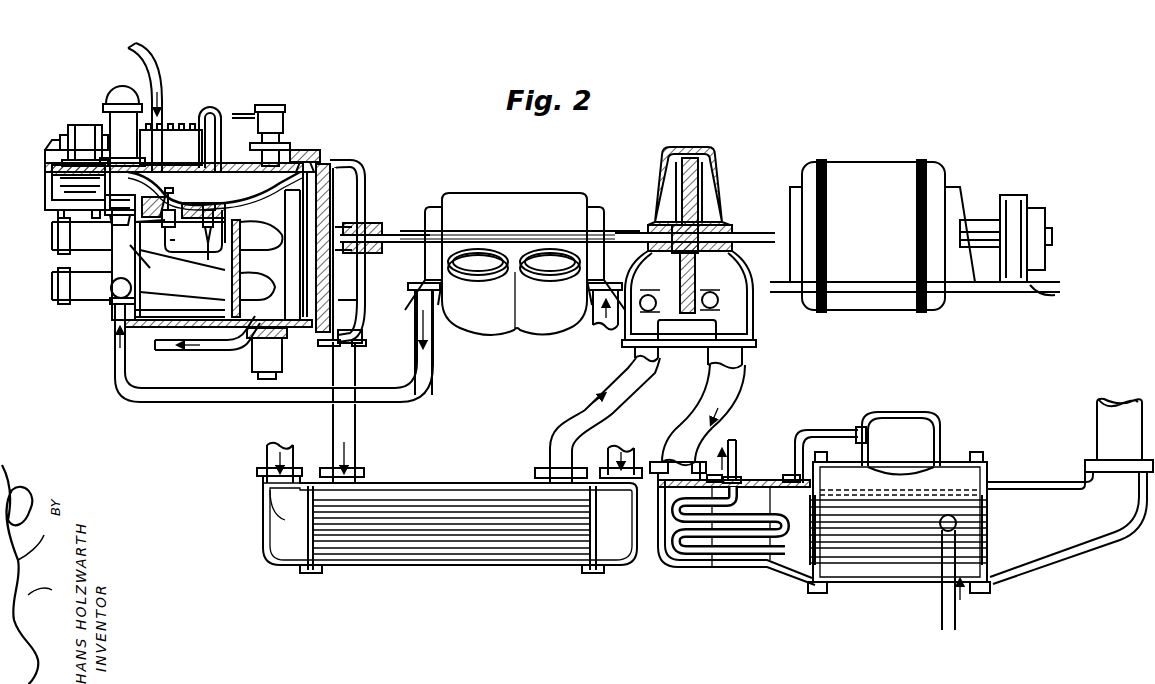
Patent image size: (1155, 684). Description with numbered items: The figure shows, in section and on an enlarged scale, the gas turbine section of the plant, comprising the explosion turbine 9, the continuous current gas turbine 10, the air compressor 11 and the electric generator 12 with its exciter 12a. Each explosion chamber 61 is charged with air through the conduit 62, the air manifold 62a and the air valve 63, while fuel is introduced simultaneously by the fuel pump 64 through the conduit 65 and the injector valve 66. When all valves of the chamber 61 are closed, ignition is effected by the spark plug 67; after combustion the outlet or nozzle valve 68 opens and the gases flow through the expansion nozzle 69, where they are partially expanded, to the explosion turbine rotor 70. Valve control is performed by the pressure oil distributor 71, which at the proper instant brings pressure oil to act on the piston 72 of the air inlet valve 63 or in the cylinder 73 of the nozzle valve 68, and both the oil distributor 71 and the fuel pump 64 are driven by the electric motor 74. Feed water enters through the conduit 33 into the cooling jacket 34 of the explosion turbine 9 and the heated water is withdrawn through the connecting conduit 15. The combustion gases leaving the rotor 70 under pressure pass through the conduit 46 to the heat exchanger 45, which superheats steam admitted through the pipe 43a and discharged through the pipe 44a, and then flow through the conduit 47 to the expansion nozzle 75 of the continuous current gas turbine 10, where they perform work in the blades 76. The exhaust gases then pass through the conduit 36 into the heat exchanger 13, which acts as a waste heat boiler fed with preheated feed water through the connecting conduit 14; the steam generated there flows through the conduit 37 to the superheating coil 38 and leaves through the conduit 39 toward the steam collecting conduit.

The explosion turbine 9 is at (168, 263).
The continuous current gas turbine 10 is at (706, 194).
The air compressor 11 is at (505, 205).
The electric generator 12 is at (857, 176).
The exciter 12a is at (1013, 212).
The heat exchanger 13 is at (950, 470).
The connecting conduit 14 is at (942, 612).
The connecting conduit 15 is at (208, 345).
The conduit 33 is at (142, 58).
The cooling jacket 34 is at (166, 176).
The conduit 36 is at (744, 375).
The conduit 37 is at (843, 430).
The superheating coil 38 is at (756, 548).
The conduit 39 is at (738, 456).
The pipe 43a is at (290, 448).
The pipe 44a is at (630, 452).
The heat exchanger 45 is at (480, 550).
The conduit 46 is at (356, 438).
The conduit 47 is at (552, 440).
The explosion chamber 61 is at (210, 190).
The conduit 62 is at (115, 372).
The air manifold 62a is at (112, 292).
The air valve 63 is at (108, 210).
The fuel pump 64 is at (186, 131).
The conduit 65 is at (212, 108).
The injector valve 66 is at (166, 228).
The spark plug 67 is at (209, 250).
The nozzle valve 68 is at (305, 165).
The expansion nozzle 69 is at (345, 158).
The rotor 70 is at (340, 208).
The pressure oil distributor 71 is at (116, 92).
The piston 72 is at (58, 200).
The cylinder 73 is at (273, 118).
The electric motor 74 is at (88, 136).
The expansion nozzle 75 is at (662, 300).
The blades 76 is at (680, 200).